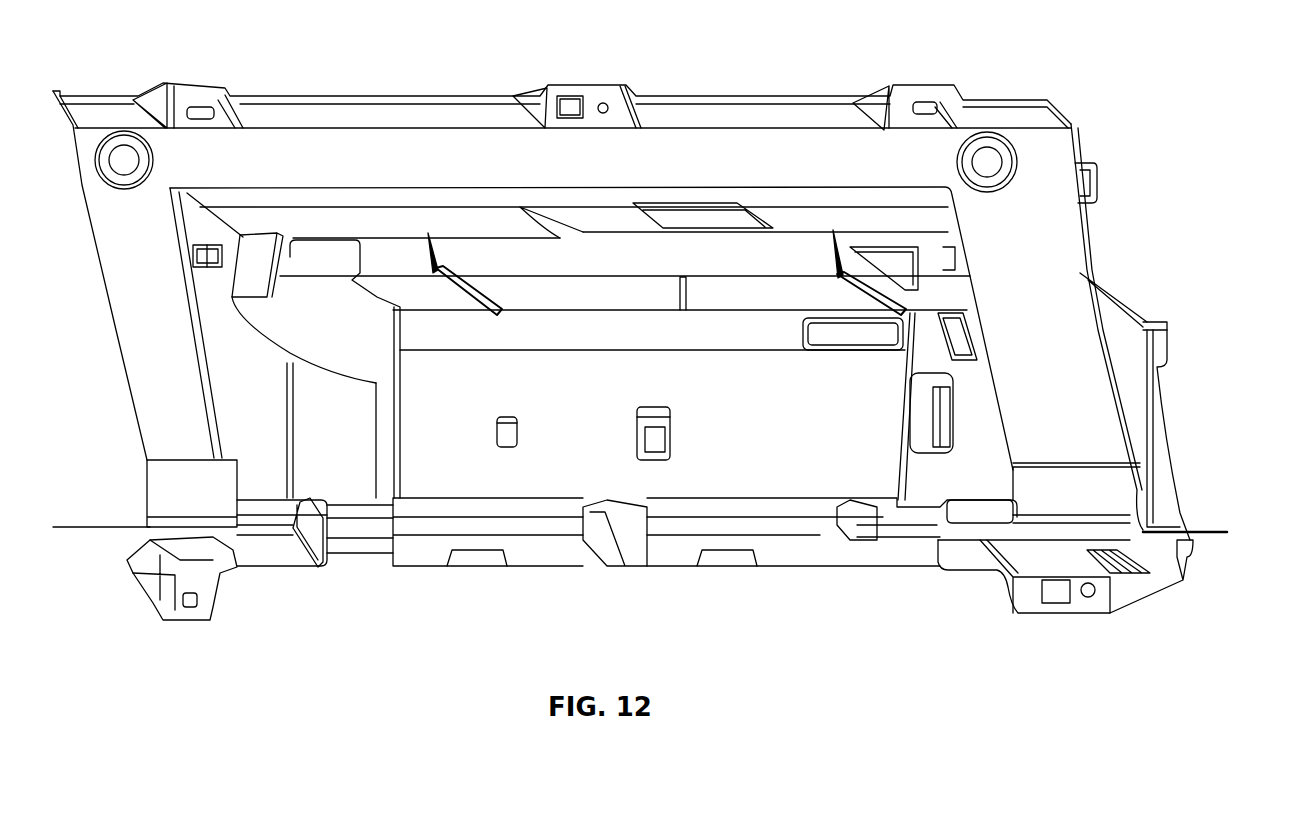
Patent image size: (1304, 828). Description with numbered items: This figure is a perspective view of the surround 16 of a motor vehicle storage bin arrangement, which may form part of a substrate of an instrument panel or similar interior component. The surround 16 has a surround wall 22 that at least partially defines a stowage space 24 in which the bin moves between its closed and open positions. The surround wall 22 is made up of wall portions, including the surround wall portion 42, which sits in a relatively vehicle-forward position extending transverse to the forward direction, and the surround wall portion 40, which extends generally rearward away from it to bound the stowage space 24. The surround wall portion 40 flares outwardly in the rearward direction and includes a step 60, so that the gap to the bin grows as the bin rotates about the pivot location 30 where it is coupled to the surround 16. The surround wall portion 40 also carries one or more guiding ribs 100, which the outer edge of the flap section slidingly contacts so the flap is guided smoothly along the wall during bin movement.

The surround 16 is at (1060, 147).
The surround wall 22 is at (793, 217).
The stowage space 24 is at (444, 474).
The pivot axis 30 is at (93, 530).
The surround wall portion 40 is at (617, 217).
The surround wall portion 42 is at (591, 445).
The step 60 is at (517, 265).
The guiding ribs 100 is at (437, 280).